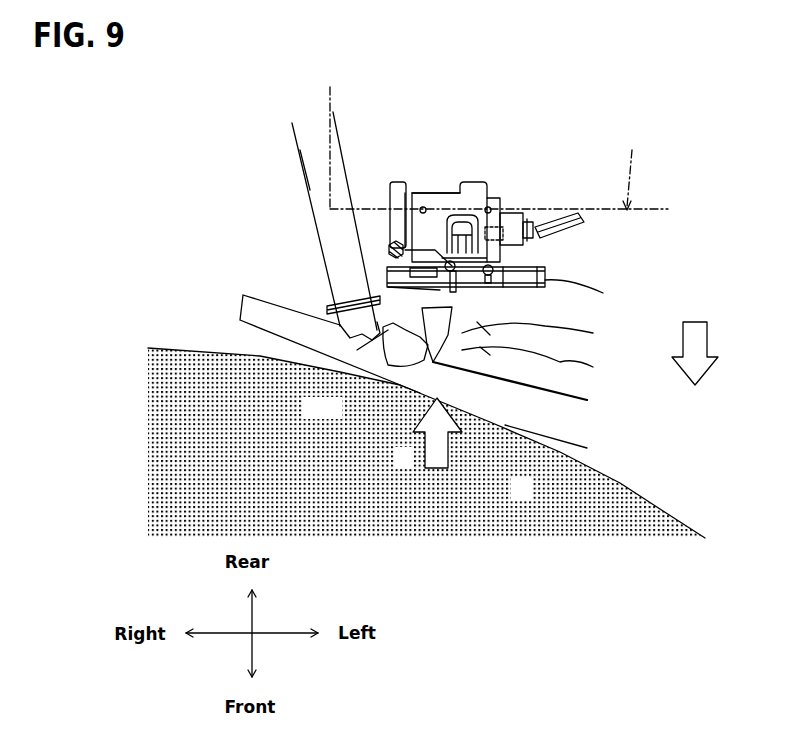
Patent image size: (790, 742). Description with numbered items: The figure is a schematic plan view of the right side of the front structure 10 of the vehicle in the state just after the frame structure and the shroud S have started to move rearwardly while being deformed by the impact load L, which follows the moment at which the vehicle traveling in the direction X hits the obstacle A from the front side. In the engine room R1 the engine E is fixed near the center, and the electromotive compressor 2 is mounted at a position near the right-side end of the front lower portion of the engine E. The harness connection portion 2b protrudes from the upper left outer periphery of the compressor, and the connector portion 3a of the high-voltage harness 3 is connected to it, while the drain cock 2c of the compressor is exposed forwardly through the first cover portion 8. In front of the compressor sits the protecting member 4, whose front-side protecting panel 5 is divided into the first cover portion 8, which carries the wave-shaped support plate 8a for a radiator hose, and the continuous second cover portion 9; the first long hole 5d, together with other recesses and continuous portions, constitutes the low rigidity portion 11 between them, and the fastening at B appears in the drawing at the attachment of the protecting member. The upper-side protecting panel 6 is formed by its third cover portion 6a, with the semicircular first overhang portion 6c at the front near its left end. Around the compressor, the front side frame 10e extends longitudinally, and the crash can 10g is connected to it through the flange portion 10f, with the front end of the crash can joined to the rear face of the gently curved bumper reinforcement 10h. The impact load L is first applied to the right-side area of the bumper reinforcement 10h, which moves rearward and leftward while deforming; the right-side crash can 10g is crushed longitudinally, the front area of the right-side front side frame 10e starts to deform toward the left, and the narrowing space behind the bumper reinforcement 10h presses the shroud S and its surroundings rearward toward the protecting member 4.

The front structure 10 is at (280, 134).
The front side frame 10e is at (305, 185).
The bumper reinforcement 10h is at (243, 295).
The flange portion 10f is at (327, 308).
The crash can 10g is at (353, 366).
The electromotive compressor 2 is at (381, 182).
The harness connection portion 2b is at (513, 213).
The drain cock 2c is at (427, 354).
The high-voltage harness 3 is at (574, 214).
The connector portion 3a is at (510, 220).
The protecting member 4 is at (504, 183).
The front-side protecting panel 5 is at (496, 346).
The first long hole 5d is at (510, 292).
The upper-side protecting panel 6 is at (448, 197).
The third cover portion 6a is at (427, 195).
The first overhang portion 6c is at (472, 215).
The first cover portion 8 is at (388, 266).
The support plate 8a is at (411, 286).
The second cover portion 9 is at (547, 272).
The low rigidity portion 11 is at (517, 262).
The bolt B is at (388, 262).
The engine E is at (633, 169).
The engine room R1 is at (667, 256).
The direction X is at (700, 353).
The impact load L is at (430, 433).
The shroud S is at (510, 370).
The obstacle A is at (670, 511).